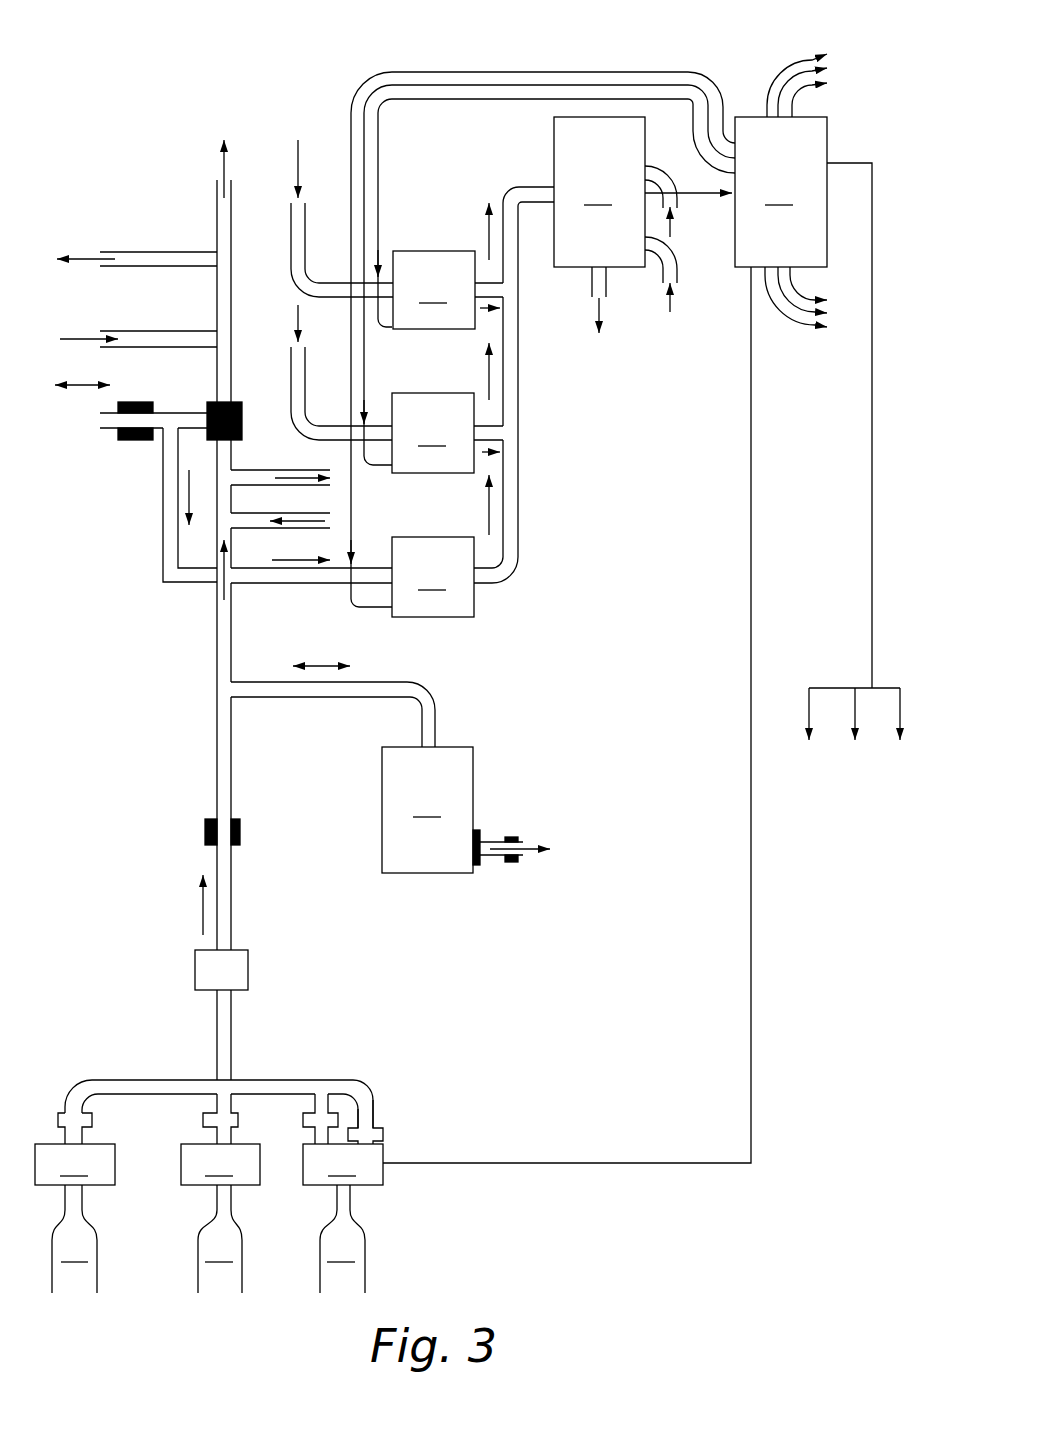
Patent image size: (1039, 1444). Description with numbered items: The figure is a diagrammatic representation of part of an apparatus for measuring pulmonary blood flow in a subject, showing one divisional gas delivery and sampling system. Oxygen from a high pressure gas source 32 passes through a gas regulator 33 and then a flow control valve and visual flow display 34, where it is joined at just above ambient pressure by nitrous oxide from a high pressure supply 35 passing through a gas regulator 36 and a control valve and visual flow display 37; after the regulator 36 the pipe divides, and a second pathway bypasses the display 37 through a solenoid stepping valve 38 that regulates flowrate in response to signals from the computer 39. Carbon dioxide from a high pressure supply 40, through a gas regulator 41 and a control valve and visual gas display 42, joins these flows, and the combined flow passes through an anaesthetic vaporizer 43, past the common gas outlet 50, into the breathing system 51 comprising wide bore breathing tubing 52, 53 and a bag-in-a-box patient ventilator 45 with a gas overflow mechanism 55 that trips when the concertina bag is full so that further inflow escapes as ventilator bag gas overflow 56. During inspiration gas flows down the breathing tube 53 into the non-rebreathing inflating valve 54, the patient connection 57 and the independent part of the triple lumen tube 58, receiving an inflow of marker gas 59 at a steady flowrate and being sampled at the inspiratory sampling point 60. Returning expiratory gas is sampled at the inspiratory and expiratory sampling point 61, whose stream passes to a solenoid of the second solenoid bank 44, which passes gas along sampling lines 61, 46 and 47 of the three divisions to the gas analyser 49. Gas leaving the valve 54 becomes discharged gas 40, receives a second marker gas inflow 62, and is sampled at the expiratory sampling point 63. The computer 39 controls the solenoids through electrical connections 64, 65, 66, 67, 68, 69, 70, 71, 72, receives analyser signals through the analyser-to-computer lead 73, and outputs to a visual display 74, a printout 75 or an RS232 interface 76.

The gas source of O2 under high pressure 32 is at (220, 1239).
The gas regulator 33 is at (220, 1164).
The flow control valve and visual flow display 34 is at (200, 1120).
The high pressure supply of N2O 35 is at (342, 1239).
The gas regulator 36 is at (527, 726).
The control valve and visual flow display 37 is at (303, 1120).
The solenoid stepping valve 38 is at (385, 1133).
The computer 39 is at (817, 402).
The high pressure supply of CO2 40 is at (223, 170).
The gas regulator 41 is at (600, 298).
The control valve and visual gas display 42 is at (63, 1107).
The anaesthetic vaporizer 43 is at (250, 972).
The solenoid bank (2) 44 is at (473, 402).
The bag-in-a-box patient ventilator 45 is at (427, 810).
The sampling line 46 is at (296, 310).
The sampling line 47 is at (294, 180).
The gas analyser 49 is at (643, 192).
The common gas outlet 50 is at (205, 830).
The breathing system 51 is at (148, 693).
The breathing tubing of wide bore 52 is at (317, 698).
The breathing tube of wide bore 53 is at (217, 645).
The non-rebreathing inflating valve 54 is at (244, 402).
The gas overflow mechanism 55 is at (478, 866).
The ventilator bag gas overflow 56 is at (520, 858).
The patient connection 57 is at (170, 412).
The independent part of triple lumen tube 58 is at (110, 430).
The inflow of marker gas (1) to inspiratory gas at a steady flowrate 59 is at (310, 521).
The sampling point, inspiratory gas (1st division) 60 is at (303, 476).
The sampling point, inspiratory and expiratory gas (1st division) 61 is at (163, 512).
The inflow of marker gas (2) 62 is at (158, 331).
The sampling point, expiratory gas (1st division) 63 is at (160, 252).
The electrical connection 64 is at (453, 72).
The electrical connection 65 is at (520, 85).
The electrical connection 66 is at (612, 98).
The electrical connection 67 is at (807, 88).
The electrical connection 68 is at (795, 80).
The electrical connection 69 is at (768, 102).
The electrical connection 70 is at (772, 303).
The electrical connection 71 is at (795, 318).
The electrical connection 72 is at (807, 287).
The analyser-to-computer lead 73 is at (694, 192).
The visual display 74 is at (806, 713).
The printout 75 is at (848, 713).
The RS232 interface 76 is at (893, 713).